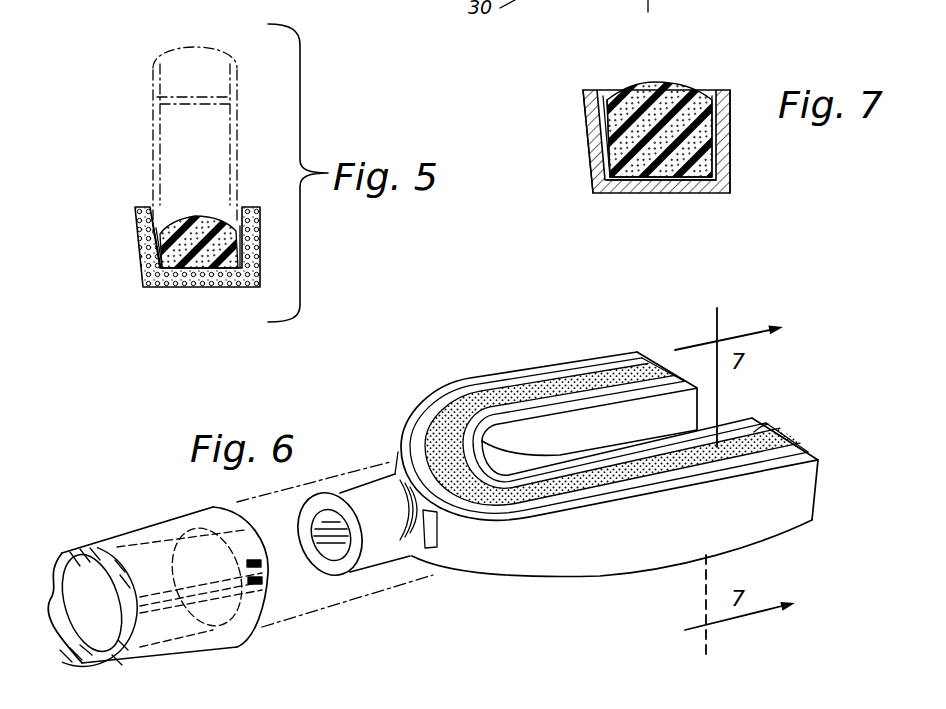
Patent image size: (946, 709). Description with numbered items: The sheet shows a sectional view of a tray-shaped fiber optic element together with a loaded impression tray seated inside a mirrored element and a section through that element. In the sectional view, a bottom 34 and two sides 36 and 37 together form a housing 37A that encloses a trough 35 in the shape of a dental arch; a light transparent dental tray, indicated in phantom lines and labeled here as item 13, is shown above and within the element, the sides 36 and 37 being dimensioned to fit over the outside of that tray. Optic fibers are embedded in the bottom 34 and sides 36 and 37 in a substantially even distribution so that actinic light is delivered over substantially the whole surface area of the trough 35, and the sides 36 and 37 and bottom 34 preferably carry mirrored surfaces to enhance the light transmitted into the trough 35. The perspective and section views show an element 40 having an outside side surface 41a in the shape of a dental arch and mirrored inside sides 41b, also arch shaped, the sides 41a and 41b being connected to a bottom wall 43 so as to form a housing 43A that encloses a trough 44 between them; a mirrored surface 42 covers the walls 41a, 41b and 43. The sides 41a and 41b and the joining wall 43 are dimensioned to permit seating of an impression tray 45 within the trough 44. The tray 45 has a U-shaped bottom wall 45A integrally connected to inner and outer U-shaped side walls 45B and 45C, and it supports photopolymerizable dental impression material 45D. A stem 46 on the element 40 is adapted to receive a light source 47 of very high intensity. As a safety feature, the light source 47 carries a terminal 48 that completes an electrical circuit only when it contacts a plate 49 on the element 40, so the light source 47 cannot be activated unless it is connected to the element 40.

In FIG. 5, the applicator housing 13 is at (140, 86).
In FIG. 5, the bottom 34 is at (182, 288).
In FIG. 5, the trough 35 is at (240, 230).
In FIG. 5, the side 36 is at (260, 264).
In FIG. 5, the side 37 is at (137, 238).
In FIG. 5, the housing 37A is at (248, 238).
In FIG. 6, the element 40 is at (566, 600).
In FIG. 7, the outside side surface 41a is at (718, 90).
In FIG. 6, the outside side surface 41a is at (770, 517).
In FIG. 7, the inside sides 41b is at (600, 92).
In FIG. 6, the inside sides 41b is at (730, 420).
In FIG. 7, the mirrored surface 42 is at (584, 128).
In FIG. 6, the mirrored surface 42 is at (477, 553).
In FIG. 7, the bottom wall 43 is at (667, 193).
In FIG. 6, the bottom wall 43 is at (603, 566).
In FIG. 6, the housing 43A is at (463, 376).
In FIG. 7, the trough 44 is at (709, 92).
In FIG. 7, the impression tray 45 is at (606, 103).
In FIG. 6, the impression tray 45 is at (430, 417).
In FIG. 7, the U-shaped bottom wall 45A is at (607, 192).
In FIG. 6, the inner U-shaped side wall 45B is at (477, 386).
In FIG. 6, the outer U-shaped side wall 45C is at (558, 395).
In FIG. 6, the photopolymerizable dental impression material 45D is at (768, 423).
In FIG. 6, the stem 46 is at (366, 500).
In FIG. 6, the light source 47 is at (190, 651).
In FIG. 6, the terminal 48 is at (263, 583).
In FIG. 6, the plate 49 is at (420, 550).